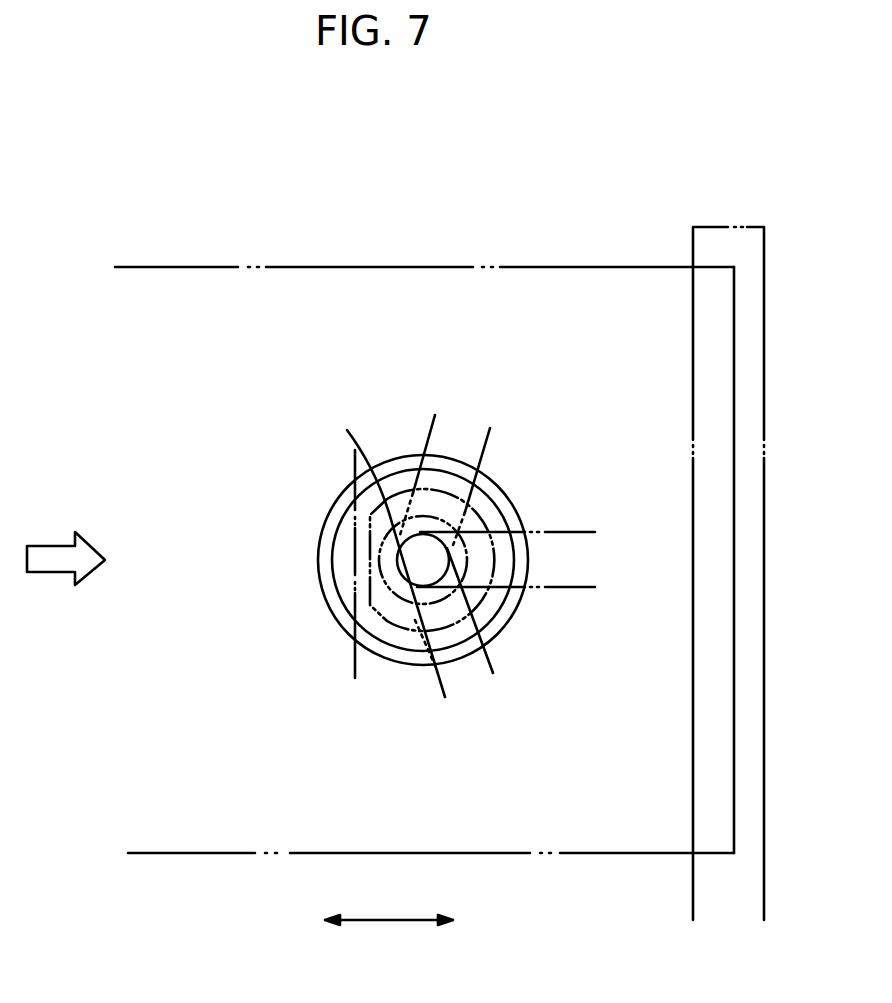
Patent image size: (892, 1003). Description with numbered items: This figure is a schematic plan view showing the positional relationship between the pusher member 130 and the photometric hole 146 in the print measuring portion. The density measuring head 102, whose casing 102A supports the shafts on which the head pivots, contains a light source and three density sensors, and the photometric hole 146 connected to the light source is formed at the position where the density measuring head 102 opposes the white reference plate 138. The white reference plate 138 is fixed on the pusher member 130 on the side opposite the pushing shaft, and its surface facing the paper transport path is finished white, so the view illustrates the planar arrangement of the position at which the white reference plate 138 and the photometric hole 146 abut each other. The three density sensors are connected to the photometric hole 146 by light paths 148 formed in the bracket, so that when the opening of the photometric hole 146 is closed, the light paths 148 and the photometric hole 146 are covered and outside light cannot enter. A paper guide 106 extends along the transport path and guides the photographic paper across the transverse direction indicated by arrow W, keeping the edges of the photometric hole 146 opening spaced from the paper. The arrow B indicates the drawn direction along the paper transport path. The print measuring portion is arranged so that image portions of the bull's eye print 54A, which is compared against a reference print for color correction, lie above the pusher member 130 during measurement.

The paper guide 106 is at (722, 226).
The bull's eye print 54A is at (240, 852).
The density measuring head 102 is at (427, 555).
The casing 102A is at (355, 482).
The pusher member 130 is at (327, 608).
The white reference plate 138 is at (338, 545).
The photometric hole 146 is at (347, 430).
The light path 148 is at (433, 418).
The direction B is at (100, 542).
The direction of arrow W is at (390, 921).